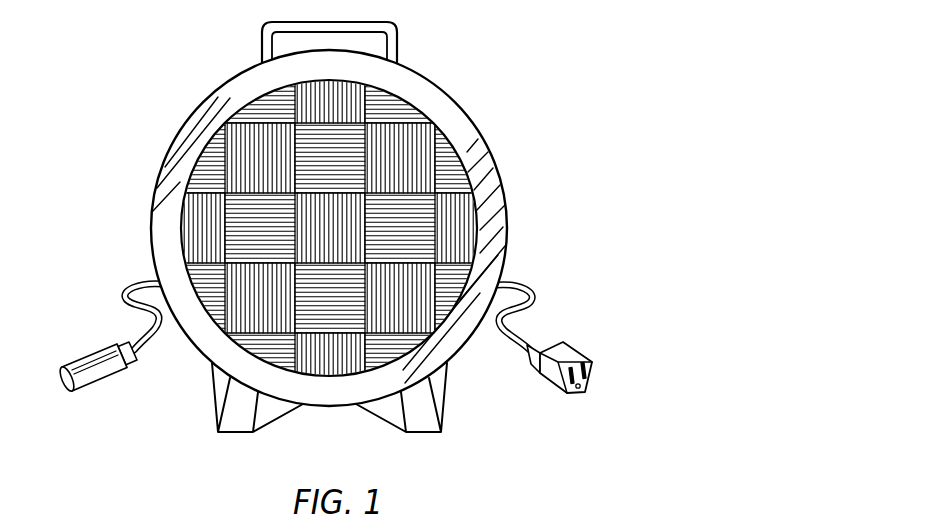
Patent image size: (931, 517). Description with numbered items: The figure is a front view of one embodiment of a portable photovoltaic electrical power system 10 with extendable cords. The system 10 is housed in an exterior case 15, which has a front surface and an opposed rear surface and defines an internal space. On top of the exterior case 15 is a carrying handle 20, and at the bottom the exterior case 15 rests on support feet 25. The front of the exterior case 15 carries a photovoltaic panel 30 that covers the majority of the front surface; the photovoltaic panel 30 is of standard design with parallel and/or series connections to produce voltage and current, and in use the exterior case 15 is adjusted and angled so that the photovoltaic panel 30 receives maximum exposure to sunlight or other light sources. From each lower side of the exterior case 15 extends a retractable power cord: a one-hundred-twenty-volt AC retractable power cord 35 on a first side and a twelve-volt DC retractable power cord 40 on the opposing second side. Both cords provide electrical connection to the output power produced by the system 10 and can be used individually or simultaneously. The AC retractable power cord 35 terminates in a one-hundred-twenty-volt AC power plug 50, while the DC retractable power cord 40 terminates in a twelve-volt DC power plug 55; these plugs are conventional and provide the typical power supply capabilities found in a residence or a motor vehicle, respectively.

The system 10 is at (330, 258).
The exterior case 15 is at (490, 157).
The carrying handle 20 is at (345, 22).
The support feet 25 is at (238, 423).
The photovoltaic panel 30 is at (408, 145).
The 120-VAC retractable power cord 35 is at (527, 286).
The 12-VDC retractable power cord 40 is at (129, 289).
The 120-VAC power plug 50 is at (579, 352).
The 12-VDC power plug 55 is at (84, 359).